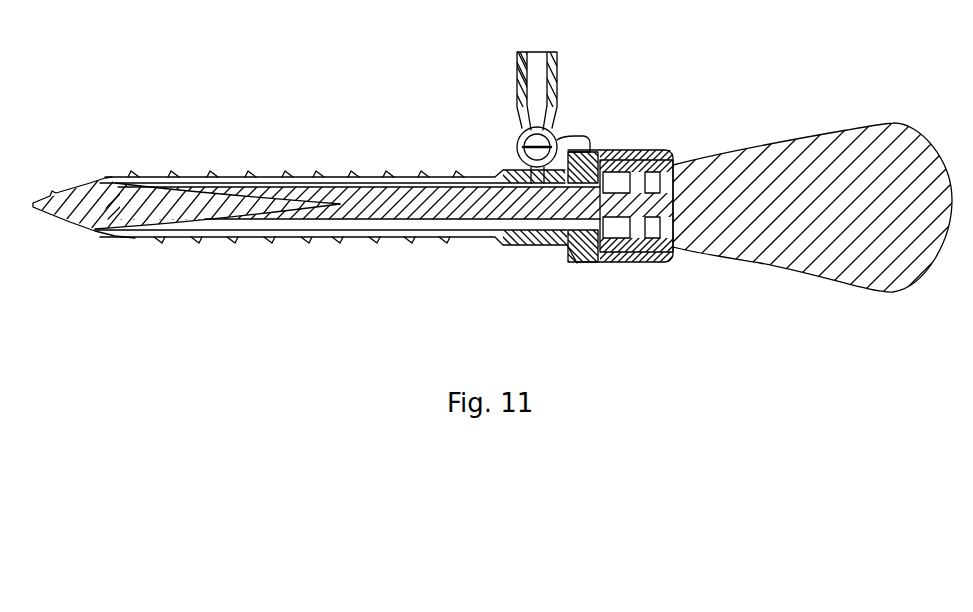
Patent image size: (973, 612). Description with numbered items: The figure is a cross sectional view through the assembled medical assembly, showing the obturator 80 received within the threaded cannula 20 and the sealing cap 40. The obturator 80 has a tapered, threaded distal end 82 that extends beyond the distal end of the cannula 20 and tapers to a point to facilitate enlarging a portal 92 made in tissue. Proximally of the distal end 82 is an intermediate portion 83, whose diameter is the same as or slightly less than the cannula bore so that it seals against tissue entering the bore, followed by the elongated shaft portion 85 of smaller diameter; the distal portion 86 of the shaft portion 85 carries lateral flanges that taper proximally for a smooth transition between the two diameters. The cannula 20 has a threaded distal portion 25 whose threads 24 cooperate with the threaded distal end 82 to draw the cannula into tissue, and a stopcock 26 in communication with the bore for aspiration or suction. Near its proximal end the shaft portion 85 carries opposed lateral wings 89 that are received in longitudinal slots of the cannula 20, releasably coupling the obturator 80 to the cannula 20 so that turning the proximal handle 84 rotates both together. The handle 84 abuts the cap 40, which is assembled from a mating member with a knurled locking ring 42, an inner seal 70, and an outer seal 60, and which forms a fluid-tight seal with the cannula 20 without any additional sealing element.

The threaded cannula 20 is at (322, 242).
The threads 24 is at (333, 242).
The threaded distal portion 25 is at (287, 240).
The stopcock 26 is at (557, 102).
The sealing cap 40 is at (632, 258).
The locking ring 42 is at (585, 263).
The outer seal 60 is at (665, 258).
The inner seal 70 is at (627, 256).
The obturator 80 is at (487, 222).
The distal end 82 is at (70, 220).
The intermediate portion 83 is at (103, 220).
The proximal handle 84 is at (742, 170).
The shaft portion 85 is at (417, 225).
The distal portion 86 is at (173, 222).
The lateral wings 89 is at (607, 170).
The portal 92 is at (42, 195).